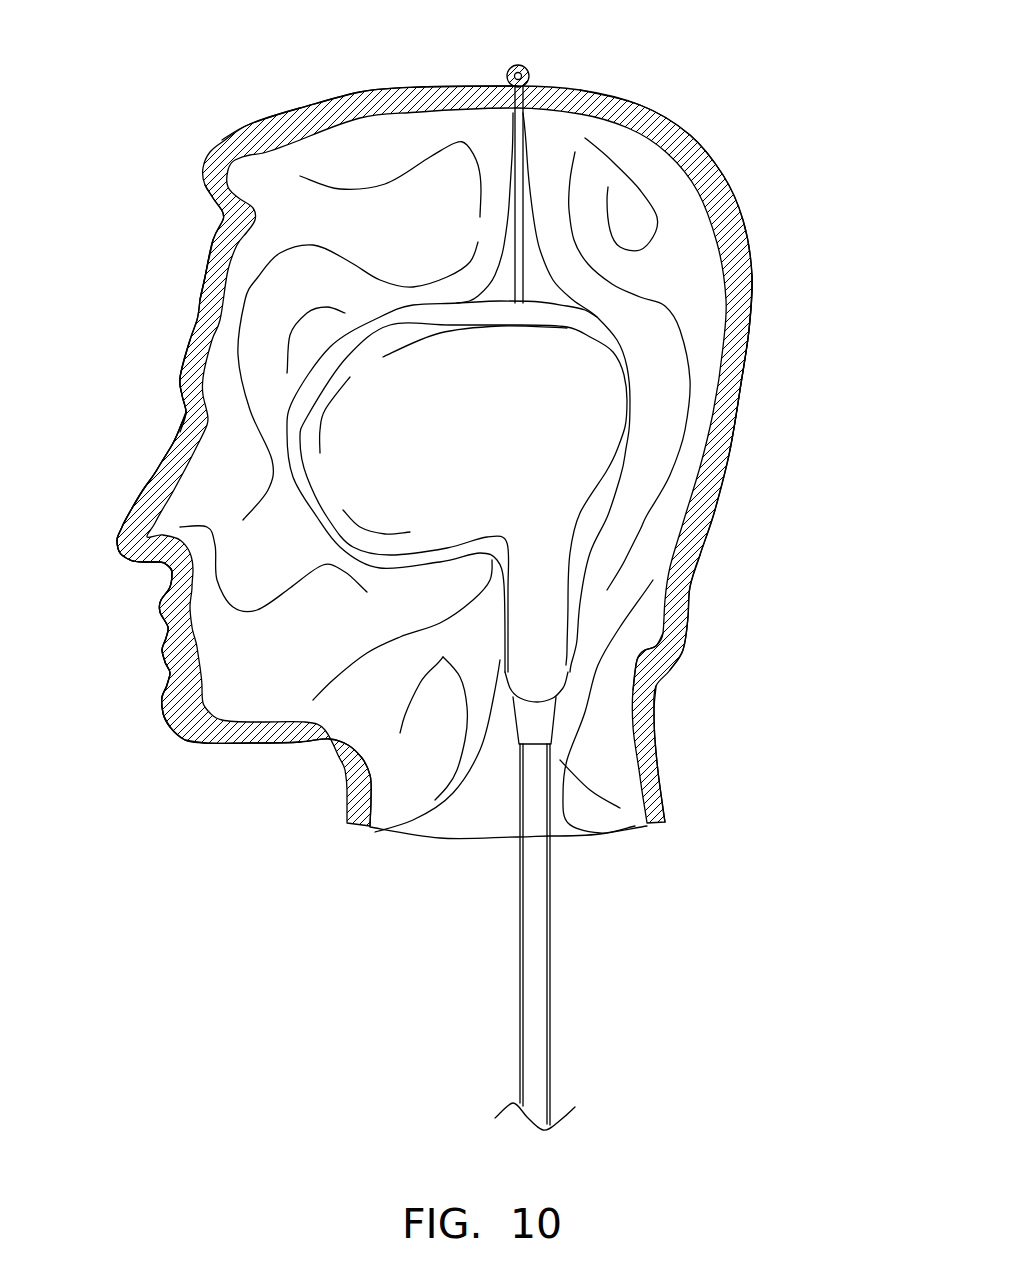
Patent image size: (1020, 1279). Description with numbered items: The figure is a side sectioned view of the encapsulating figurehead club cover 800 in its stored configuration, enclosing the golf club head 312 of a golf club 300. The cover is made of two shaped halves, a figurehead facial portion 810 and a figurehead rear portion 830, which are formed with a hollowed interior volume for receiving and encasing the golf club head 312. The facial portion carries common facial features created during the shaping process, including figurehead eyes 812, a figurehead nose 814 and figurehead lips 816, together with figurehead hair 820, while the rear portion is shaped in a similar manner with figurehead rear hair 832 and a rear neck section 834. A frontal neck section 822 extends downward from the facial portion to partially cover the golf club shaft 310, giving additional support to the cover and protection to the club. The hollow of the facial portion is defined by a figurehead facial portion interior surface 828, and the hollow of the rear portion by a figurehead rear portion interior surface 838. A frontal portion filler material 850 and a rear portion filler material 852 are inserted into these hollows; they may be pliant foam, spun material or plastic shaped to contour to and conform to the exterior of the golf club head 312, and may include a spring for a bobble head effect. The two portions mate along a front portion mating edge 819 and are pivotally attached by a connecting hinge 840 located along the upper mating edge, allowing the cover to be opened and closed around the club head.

The encapsulating figurehead club cover 800 is at (474, 450).
The figurehead facial portion 810 is at (145, 732).
The figurehead eyes 812 is at (184, 413).
The figurehead nose 814 is at (160, 460).
The figurehead lips 816 is at (160, 627).
The figurehead facial portion interior surface 828 is at (218, 317).
The figurehead hair 820 is at (333, 100).
The frontal neck section 822 is at (342, 792).
The figurehead rear portion 830 is at (800, 220).
The figurehead rear hair 832 is at (750, 350).
The figurehead rear portion interior surface 838 is at (700, 550).
The rear portion filler material 852 is at (613, 660).
The rear neck section 834 is at (657, 757).
The connecting hinge 840 is at (518, 63).
The frontal portion filler material 850 is at (313, 660).
The front portion mating edge 819 is at (513, 815).
The golf club 300 is at (497, 715).
The golf club shaft 310 is at (521, 962).
The golf club head 312 is at (512, 450).